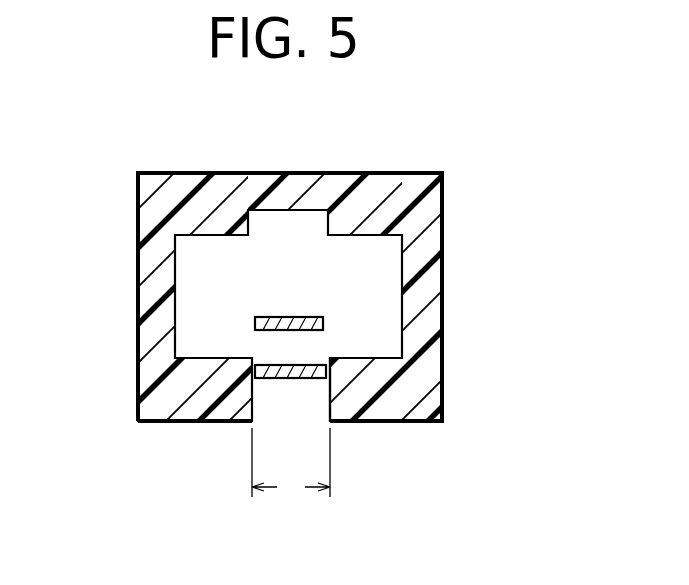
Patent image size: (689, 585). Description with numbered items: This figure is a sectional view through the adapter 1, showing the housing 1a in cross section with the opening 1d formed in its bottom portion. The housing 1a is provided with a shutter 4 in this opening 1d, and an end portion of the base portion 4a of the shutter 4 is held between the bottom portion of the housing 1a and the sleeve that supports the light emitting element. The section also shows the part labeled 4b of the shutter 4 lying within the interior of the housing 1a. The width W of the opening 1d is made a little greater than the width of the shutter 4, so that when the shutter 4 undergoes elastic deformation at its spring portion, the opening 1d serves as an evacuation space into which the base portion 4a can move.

The adapter 1 is at (445, 207).
The housing 1a is at (138, 308).
The opening 1d is at (332, 398).
The shutter 4 is at (326, 323).
The base portion 4a is at (283, 378).
The upper surface of terminal 4b is at (292, 322).
The width W is at (291, 465).